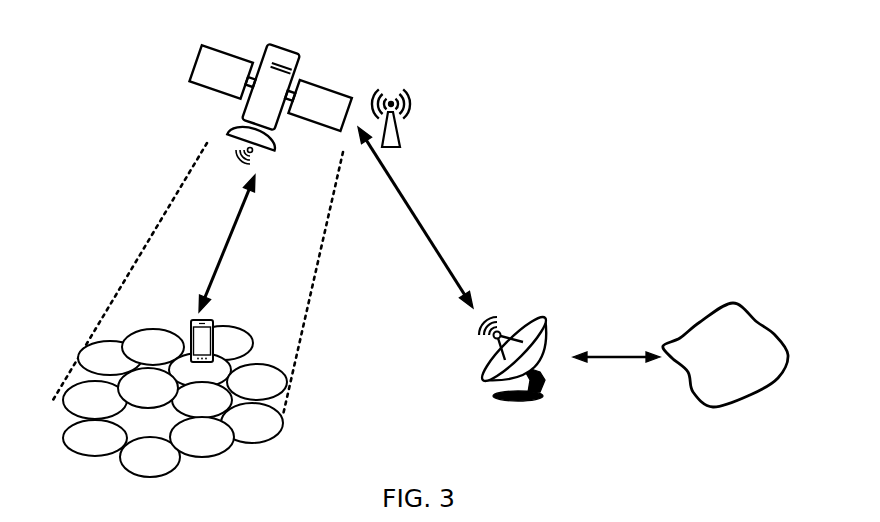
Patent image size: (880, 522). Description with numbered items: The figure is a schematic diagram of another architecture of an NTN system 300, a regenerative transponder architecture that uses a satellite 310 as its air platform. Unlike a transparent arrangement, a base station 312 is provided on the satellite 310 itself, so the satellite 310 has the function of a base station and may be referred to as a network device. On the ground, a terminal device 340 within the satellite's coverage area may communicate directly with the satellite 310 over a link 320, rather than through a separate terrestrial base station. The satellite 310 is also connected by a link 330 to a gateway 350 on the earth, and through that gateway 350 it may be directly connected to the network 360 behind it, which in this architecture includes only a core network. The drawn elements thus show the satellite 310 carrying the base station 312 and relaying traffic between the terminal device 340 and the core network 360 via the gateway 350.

The NTN system 300 is at (420, 240).
The satellite 310 is at (323, 83).
The base station 312 is at (412, 102).
The satellite-to-user communication link 320 is at (218, 243).
The satellite-to-gateway communication link 330 is at (415, 217).
The terminal device 340 is at (215, 312).
The gateway 350 is at (523, 317).
The network 360 is at (725, 355).